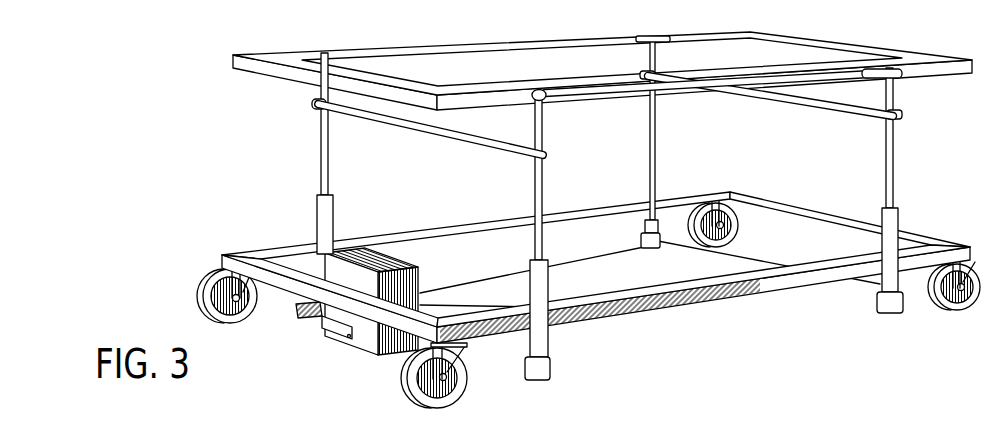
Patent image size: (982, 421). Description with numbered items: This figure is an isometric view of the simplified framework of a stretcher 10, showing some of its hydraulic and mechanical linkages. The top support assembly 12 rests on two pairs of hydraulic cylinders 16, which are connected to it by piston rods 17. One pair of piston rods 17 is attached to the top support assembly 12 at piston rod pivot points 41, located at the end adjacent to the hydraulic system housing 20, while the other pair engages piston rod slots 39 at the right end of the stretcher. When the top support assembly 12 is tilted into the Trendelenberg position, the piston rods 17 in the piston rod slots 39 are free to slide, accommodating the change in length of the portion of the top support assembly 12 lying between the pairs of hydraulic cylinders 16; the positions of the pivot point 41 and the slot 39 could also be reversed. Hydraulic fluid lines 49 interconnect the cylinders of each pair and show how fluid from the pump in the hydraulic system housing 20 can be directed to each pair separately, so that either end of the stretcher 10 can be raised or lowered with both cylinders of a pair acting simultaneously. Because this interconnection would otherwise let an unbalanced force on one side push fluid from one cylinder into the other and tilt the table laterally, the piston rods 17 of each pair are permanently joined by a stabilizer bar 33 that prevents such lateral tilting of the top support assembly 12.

The stretcher 10 is at (659, 351).
The top support assembly 12 is at (180, 102).
The hydraulic cylinder 16 is at (879, 301).
The piston rod 17 is at (318, 164).
The hydraulic system housing 20 is at (363, 339).
The stabilizer bar 33 is at (413, 128).
The piston rod slot 39 is at (906, 79).
The piston rod pivot point 41 is at (541, 92).
The hydraulic fluid line 49 is at (617, 263).